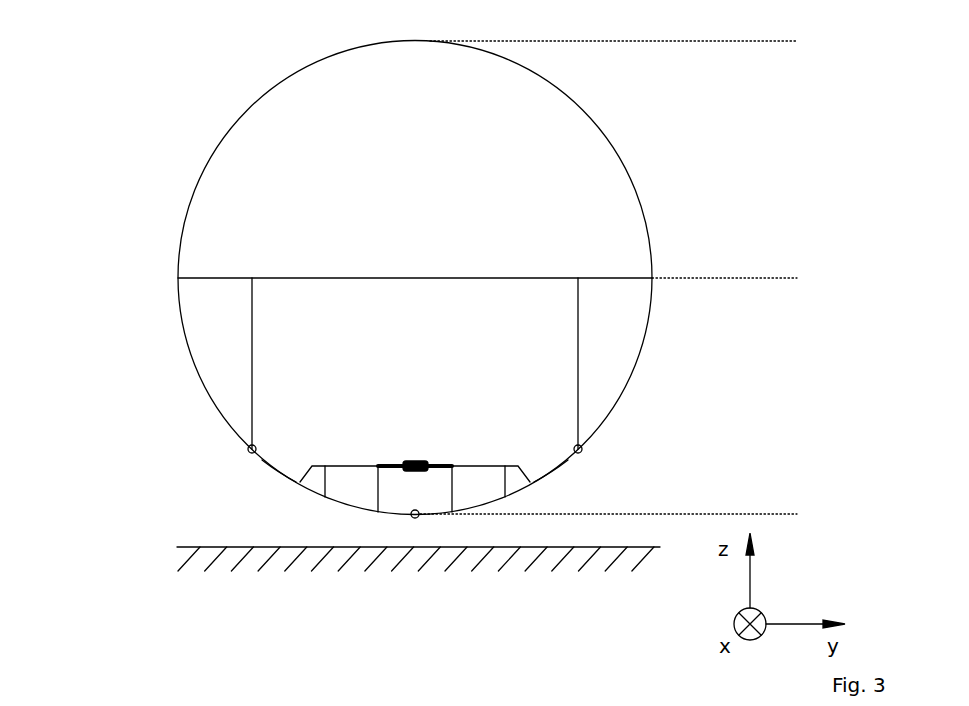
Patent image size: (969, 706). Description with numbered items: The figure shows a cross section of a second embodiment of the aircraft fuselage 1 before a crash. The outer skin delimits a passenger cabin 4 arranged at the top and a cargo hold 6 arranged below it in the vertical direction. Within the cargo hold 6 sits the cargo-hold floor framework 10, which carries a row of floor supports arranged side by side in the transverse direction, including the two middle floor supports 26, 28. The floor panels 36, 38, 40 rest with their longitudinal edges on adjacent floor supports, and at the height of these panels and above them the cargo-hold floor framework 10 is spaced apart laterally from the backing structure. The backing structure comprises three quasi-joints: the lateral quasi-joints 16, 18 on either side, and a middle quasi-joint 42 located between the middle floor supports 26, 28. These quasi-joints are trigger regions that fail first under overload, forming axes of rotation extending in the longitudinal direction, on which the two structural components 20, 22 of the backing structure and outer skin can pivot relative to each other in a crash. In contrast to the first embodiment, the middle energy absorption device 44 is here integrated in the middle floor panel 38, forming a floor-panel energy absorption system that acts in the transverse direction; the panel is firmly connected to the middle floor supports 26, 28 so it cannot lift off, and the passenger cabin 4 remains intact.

The aircraft fuselage 1 is at (52, 26).
The passenger cabin 4 is at (797, 41).
The cargo hold 6 is at (797, 278).
The cargo-hold floor framework 10 is at (528, 443).
The lateral quasi-joint 18 is at (582, 447).
The lateral quasi-joint 16 is at (251, 453).
The structural component 20 is at (278, 472).
The structural component 22 is at (557, 468).
The floor panel 36 is at (353, 467).
The middle floor support 26 is at (378, 492).
The middle floor support 28 is at (452, 488).
The middle floor panel 38 is at (387, 466).
The middle energy absorption device 44 is at (368, 627).
The middle quasi-joint 42 is at (416, 518).
The floor panel 40 is at (482, 467).